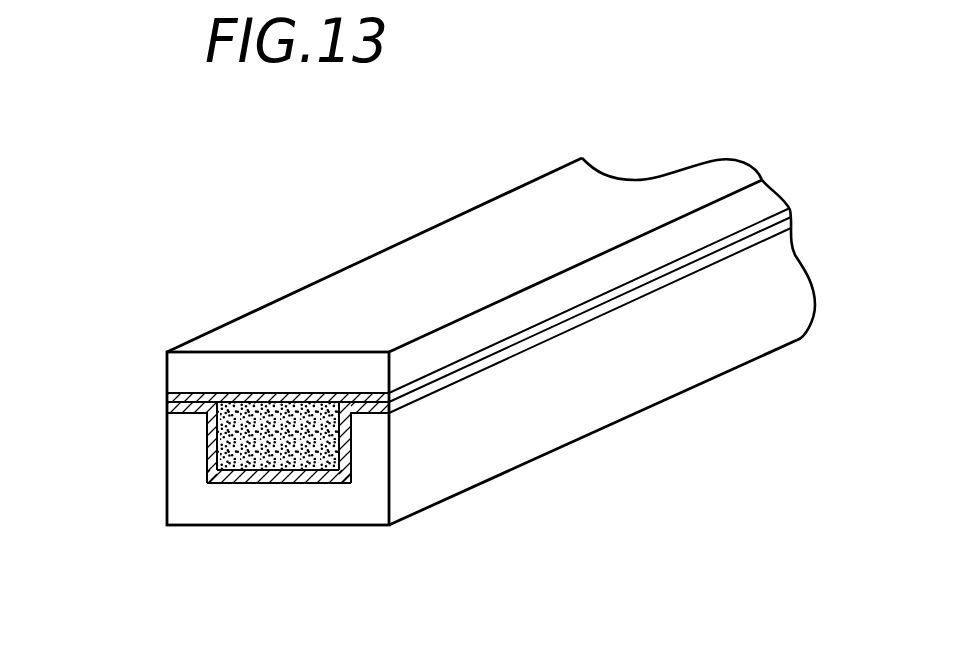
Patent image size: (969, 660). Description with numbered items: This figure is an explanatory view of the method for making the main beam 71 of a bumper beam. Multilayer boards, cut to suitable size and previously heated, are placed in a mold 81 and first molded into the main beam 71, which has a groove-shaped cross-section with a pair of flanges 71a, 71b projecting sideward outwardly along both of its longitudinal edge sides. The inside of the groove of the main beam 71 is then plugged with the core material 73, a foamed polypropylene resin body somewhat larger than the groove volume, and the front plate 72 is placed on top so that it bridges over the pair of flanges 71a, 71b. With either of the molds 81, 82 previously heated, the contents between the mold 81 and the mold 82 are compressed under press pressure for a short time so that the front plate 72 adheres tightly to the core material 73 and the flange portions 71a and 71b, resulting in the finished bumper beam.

The mold 81 is at (462, 237).
The mold 82 is at (642, 385).
The front plate 72 is at (313, 400).
The core material 73 is at (257, 412).
The main beam 71 is at (257, 473).
The flange 71a is at (373, 400).
The flange 71b is at (188, 415).